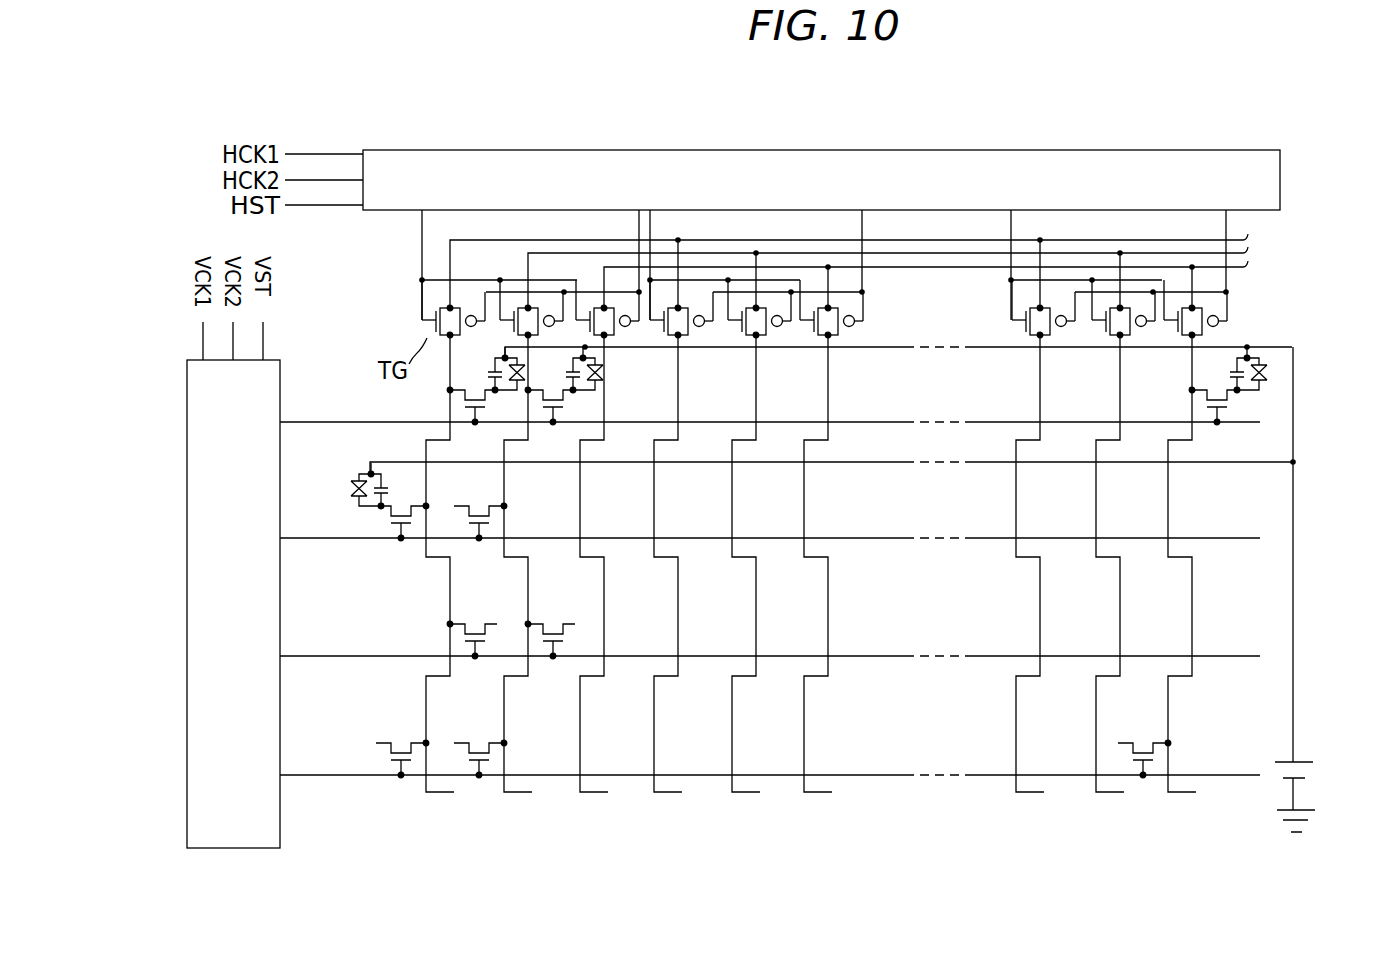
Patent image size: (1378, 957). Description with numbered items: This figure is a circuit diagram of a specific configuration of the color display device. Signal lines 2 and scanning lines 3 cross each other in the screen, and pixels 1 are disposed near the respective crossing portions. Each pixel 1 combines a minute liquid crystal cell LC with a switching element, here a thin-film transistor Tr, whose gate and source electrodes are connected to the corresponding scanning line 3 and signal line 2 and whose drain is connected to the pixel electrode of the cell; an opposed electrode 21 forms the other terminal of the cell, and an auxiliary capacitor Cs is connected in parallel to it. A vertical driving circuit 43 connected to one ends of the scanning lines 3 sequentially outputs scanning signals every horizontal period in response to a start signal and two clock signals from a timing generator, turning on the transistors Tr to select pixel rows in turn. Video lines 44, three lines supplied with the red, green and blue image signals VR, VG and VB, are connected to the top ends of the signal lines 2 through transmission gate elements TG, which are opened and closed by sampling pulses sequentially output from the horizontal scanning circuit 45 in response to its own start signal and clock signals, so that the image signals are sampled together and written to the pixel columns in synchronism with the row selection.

The pixel 1 is at (362, 460).
The signal line 2 is at (1017, 730).
The scanning line 3 is at (1072, 778).
The opposed electrode 21 is at (1300, 650).
The vertical driving circuit 43 is at (283, 805).
The video lines 44 is at (1243, 236).
The horizontal scanning circuit 45 is at (993, 150).